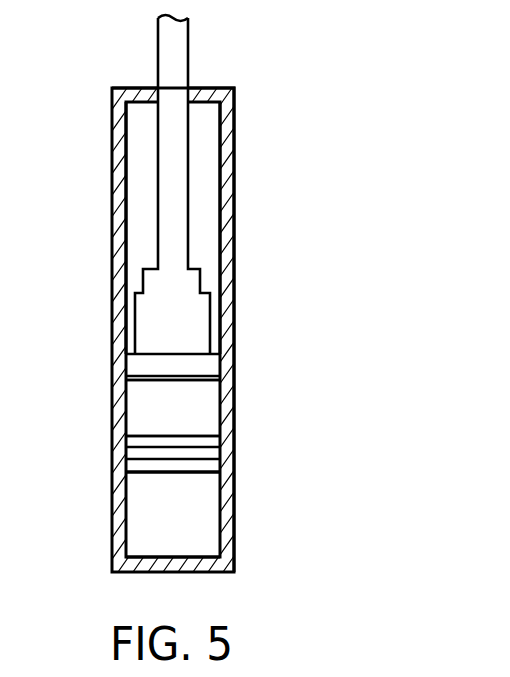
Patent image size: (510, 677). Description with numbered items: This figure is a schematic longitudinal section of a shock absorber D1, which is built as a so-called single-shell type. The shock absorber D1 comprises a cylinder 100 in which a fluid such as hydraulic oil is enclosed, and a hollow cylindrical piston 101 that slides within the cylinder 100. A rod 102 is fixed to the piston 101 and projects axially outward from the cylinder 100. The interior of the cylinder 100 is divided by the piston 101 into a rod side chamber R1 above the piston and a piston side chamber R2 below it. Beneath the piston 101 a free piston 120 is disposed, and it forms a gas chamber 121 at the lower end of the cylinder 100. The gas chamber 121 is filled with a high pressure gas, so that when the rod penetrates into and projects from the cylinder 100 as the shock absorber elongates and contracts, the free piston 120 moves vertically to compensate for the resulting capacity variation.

The cylinder 100 is at (112, 265).
The hollow cylindrical piston 101 is at (212, 370).
The piston rod 102 is at (160, 176).
The free piston 120 is at (212, 440).
The gas chamber 121 is at (191, 516).
The rod side chamber R1 is at (200, 211).
The piston side chamber R2 is at (191, 418).
The shock absorber D1 is at (238, 114).